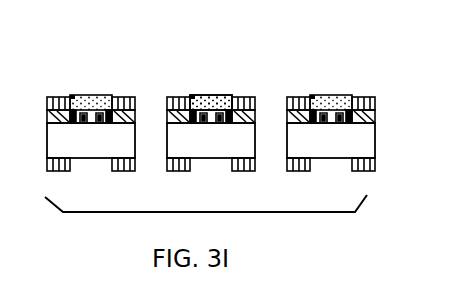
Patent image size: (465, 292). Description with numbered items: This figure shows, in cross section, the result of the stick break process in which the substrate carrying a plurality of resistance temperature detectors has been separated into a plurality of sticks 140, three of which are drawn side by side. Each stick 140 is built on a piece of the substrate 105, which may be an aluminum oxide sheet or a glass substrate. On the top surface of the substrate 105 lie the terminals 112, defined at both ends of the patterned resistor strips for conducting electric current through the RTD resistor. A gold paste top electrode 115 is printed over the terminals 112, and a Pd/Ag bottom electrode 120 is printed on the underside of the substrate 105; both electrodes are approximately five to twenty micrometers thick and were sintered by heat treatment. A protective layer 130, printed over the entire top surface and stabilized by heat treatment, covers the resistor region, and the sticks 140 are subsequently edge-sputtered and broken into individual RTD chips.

The sticks 140 is at (239, 107).
The protective layer 130 is at (208, 96).
The gold paste top electrode 115 is at (360, 95).
The terminals 112 is at (373, 102).
The substrate 105 is at (365, 142).
The bottom electrode 120 is at (371, 161).